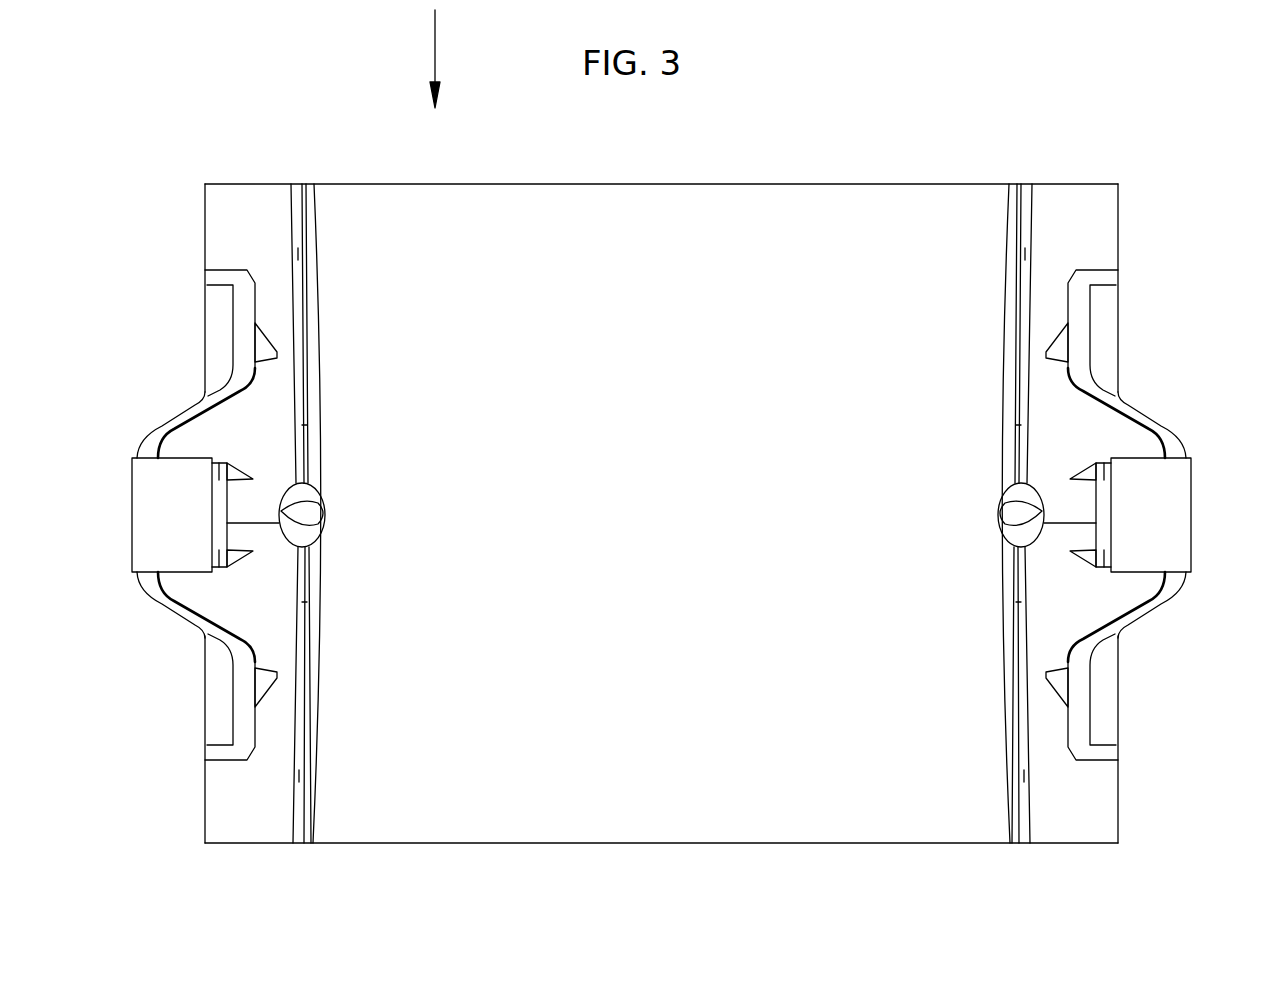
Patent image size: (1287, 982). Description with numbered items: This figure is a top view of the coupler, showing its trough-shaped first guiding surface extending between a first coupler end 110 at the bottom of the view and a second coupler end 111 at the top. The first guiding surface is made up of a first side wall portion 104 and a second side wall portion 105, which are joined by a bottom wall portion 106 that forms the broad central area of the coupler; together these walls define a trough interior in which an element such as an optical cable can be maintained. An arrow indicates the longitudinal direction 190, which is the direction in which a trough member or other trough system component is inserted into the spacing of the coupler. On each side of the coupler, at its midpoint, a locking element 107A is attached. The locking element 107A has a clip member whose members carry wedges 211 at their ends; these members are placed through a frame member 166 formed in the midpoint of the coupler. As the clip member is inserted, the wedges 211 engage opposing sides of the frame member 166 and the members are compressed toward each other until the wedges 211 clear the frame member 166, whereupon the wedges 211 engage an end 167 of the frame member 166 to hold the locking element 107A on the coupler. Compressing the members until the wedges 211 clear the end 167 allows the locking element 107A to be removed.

The longitudinal direction 190 is at (435, 50).
The second side wall portion 105 is at (311, 213).
The first side wall portion 104 is at (1012, 812).
The bottom wall portion 106 is at (752, 223).
The second coupler end 111 is at (642, 184).
The first coupler end 110 is at (660, 843).
The locking element 107A is at (1143, 412).
The frame member 166 is at (1177, 519).
The end of frame member 167 is at (1113, 535).
The wedge 211 is at (1094, 472).